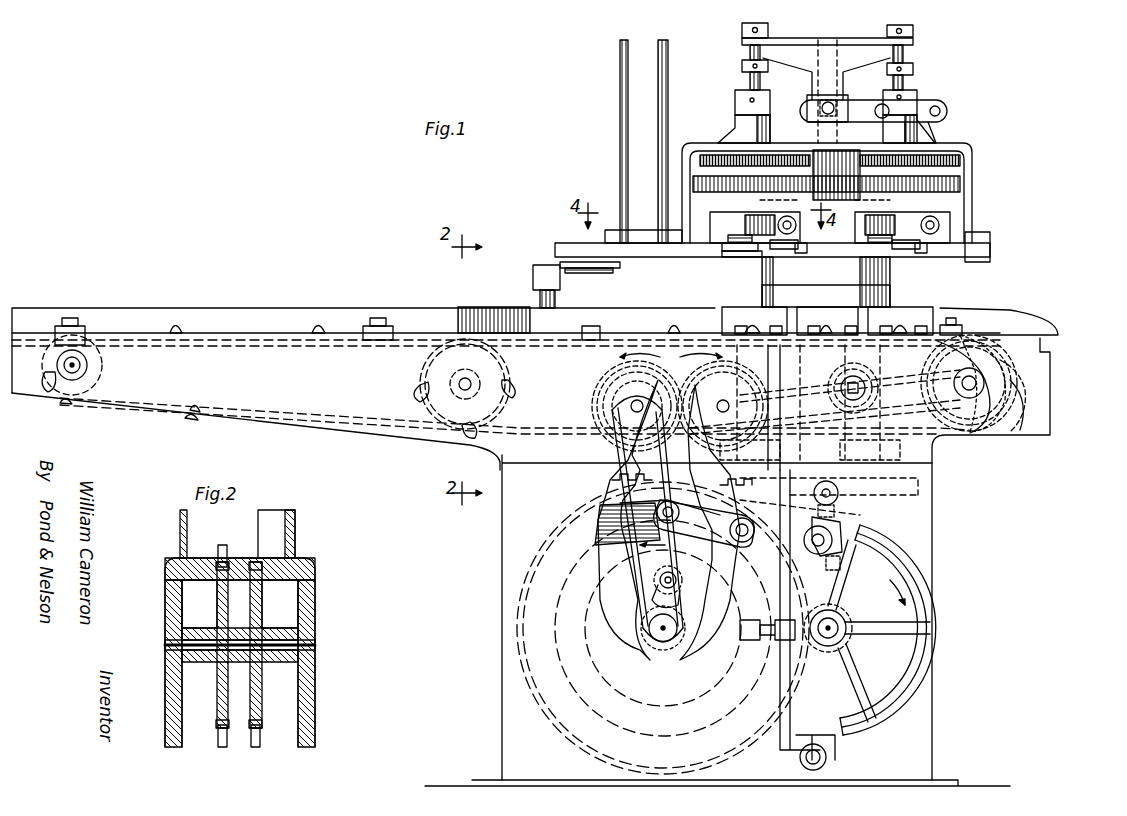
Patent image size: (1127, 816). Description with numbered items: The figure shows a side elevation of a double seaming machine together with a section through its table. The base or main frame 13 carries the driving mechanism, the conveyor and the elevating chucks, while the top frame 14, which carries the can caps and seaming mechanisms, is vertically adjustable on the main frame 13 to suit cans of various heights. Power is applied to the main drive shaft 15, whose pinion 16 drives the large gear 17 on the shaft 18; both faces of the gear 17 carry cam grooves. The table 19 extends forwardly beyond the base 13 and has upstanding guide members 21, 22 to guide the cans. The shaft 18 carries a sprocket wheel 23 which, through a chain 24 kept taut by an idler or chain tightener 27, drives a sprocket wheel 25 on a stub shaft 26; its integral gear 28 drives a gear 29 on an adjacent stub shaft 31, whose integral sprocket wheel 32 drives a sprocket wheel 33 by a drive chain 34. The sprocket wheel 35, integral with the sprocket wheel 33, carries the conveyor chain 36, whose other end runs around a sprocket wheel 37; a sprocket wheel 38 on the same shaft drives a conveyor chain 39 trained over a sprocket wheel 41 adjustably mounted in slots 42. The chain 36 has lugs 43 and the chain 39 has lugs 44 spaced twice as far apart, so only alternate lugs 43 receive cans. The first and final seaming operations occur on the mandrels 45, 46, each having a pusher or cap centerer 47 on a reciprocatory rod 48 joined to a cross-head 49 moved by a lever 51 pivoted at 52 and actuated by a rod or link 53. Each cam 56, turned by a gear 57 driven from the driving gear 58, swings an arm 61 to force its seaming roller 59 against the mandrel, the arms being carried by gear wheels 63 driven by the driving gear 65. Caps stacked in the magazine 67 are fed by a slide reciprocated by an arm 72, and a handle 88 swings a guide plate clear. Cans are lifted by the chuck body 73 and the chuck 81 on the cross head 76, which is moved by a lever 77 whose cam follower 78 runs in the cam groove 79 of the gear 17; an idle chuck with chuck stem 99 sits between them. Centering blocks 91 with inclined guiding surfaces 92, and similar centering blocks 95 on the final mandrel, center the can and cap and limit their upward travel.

In FIG. 1, the base or main frame 13 is at (932, 500).
In FIG. 1, the top frame 14 is at (972, 160).
In FIG. 1, the main drive shaft 15 is at (855, 640).
In FIG. 1, the pinion 16 is at (850, 612).
In FIG. 1, the large gear 17 is at (694, 500).
In FIG. 1, the shaft 18 is at (664, 632).
In FIG. 1, the table 19 is at (360, 420).
In FIG. 2, the table 19 is at (315, 616).
In FIG. 1, the guide member 21 is at (358, 318).
In FIG. 2, the guide member 21 is at (295, 533).
In FIG. 2, the guide member 22 is at (180, 535).
In FIG. 1, the sprocket wheel 23 is at (645, 626).
In FIG. 1, the chain 24 is at (635, 570).
In FIG. 1, the sprocket wheel 25 is at (655, 440).
In FIG. 1, the stub shaft 26 is at (636, 404).
In FIG. 1, the idler or chain tightener 27 is at (684, 578).
In FIG. 1, the gear 28 is at (652, 388).
In FIG. 1, the gear 29 is at (692, 388).
In FIG. 1, the stub shaft 31 is at (808, 407).
In FIG. 1, the sprocket wheel 32 is at (760, 372).
In FIG. 1, the sprocket wheel 33 is at (995, 415).
In FIG. 1, the drive chain 34 is at (878, 382).
In FIG. 1, the sprocket wheel 35 is at (1010, 390).
In FIG. 1, the conveyor chain 36 is at (1020, 410).
In FIG. 2, the conveyor chain 36 is at (220, 562).
In FIG. 1, the sprocket wheel 37 is at (448, 358).
In FIG. 2, the sprocket wheel 37 is at (217, 607).
In FIG. 1, the sprocket wheel 38 is at (445, 420).
In FIG. 2, the sprocket wheel 38 is at (262, 607).
In FIG. 1, the conveyor chain 39 is at (222, 414).
In FIG. 2, the conveyor chain 39 is at (255, 562).
In FIG. 1, the sprocket wheel 41 is at (90, 355).
In FIG. 1, the slots 42 is at (58, 388).
In FIG. 1, the lugs or fingers 43 is at (545, 325).
In FIG. 2, the lugs or fingers 43 is at (222, 545).
In FIG. 1, the lugs 44 is at (176, 330).
In FIG. 2, the lugs 44 is at (256, 748).
In FIG. 1, the mandrel 45 is at (762, 262).
In FIG. 1, the mandrel 46 is at (872, 258).
In FIG. 1, the pusher or cap centerer 47 is at (778, 250).
In FIG. 1, the reciprocatory rod 48 is at (748, 80).
In FIG. 1, the cross-head 49 is at (850, 44).
In FIG. 1, the lever 51 is at (855, 102).
In FIG. 1, the pivot 52 is at (890, 110).
In FIG. 1, the rod or link 53 is at (940, 125).
In FIG. 1, the cam 56 is at (755, 214).
In FIG. 1, the gear 57 is at (712, 155).
In FIG. 1, the driving gear 58 is at (850, 152).
In FIG. 1, the seaming roller 59 is at (740, 246).
In FIG. 1, the arm 61 is at (722, 222).
In FIG. 1, the gear wheel 63 is at (693, 182).
In FIG. 1, the driving gear 65 is at (806, 158).
In FIG. 1, the magazine 67 is at (638, 230).
In FIG. 1, the arm 72 is at (586, 268).
In FIG. 1, the chuck body 73 is at (750, 449).
In FIG. 1, the cross head 76 is at (858, 508).
In FIG. 1, the lever 77 is at (704, 523).
In FIG. 1, the cam follower 78 is at (620, 503).
In FIG. 1, the cam groove 79 is at (610, 540).
In FIG. 1, the chuck 81 is at (912, 470).
In FIG. 1, the handle 88 is at (722, 250).
In FIG. 1, the centering blocks 91 is at (796, 228).
In FIG. 1, the inclined guiding surfaces 92 is at (800, 254).
In FIG. 1, the centering blocks 95 is at (948, 248).
In FIG. 1, the chuck stem 99 is at (870, 449).